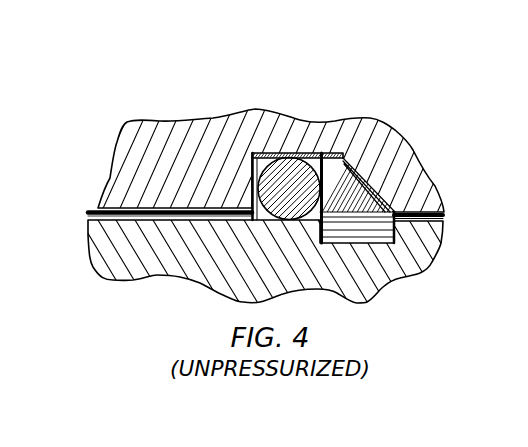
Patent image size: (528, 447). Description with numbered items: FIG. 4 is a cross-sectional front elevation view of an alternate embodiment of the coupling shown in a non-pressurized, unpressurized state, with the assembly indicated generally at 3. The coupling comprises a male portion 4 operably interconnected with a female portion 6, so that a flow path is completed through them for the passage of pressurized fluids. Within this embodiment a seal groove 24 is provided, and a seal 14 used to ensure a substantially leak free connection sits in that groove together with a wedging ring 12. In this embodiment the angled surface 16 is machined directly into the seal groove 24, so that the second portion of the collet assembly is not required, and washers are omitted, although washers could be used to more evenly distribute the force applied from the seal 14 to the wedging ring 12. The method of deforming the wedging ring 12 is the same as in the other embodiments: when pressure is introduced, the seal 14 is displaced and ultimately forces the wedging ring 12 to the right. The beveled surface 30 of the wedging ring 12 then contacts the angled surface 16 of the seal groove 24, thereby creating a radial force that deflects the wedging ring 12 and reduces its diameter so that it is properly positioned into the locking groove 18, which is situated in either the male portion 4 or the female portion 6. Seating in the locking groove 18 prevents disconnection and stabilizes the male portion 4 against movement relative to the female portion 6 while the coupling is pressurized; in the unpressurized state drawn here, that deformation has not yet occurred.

The seal assembly 3 is at (99, 115).
The male portion 4 is at (150, 265).
The female portion 6 is at (268, 122).
The wedging ring 12 is at (363, 238).
The seal 14 is at (268, 165).
The angled surface 16 is at (383, 190).
The locking groove 18 is at (405, 234).
The seal groove 24 is at (343, 157).
The beveled surface 30 is at (347, 216).